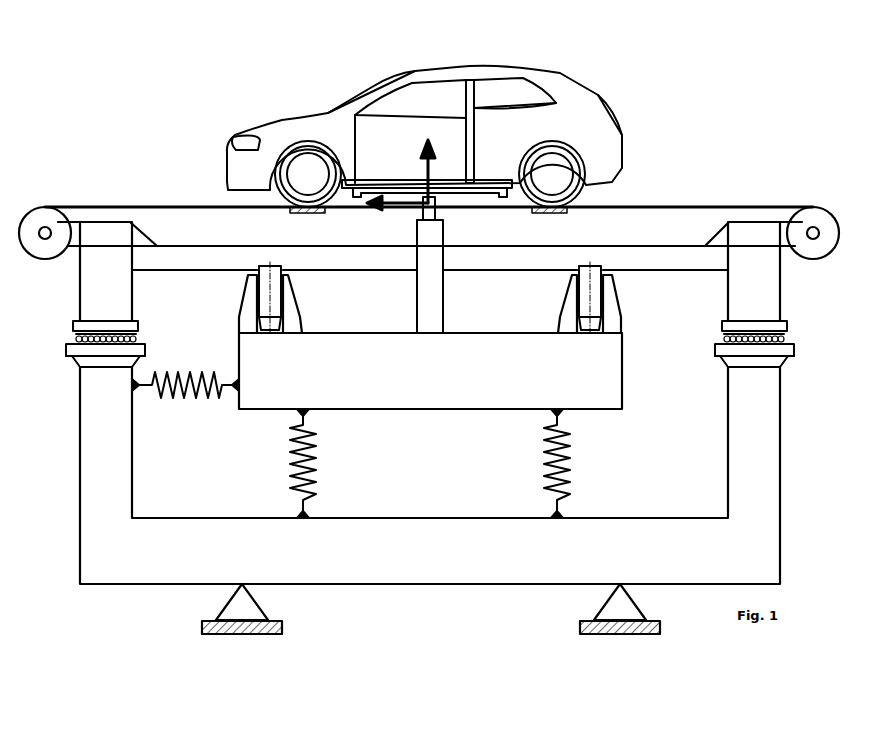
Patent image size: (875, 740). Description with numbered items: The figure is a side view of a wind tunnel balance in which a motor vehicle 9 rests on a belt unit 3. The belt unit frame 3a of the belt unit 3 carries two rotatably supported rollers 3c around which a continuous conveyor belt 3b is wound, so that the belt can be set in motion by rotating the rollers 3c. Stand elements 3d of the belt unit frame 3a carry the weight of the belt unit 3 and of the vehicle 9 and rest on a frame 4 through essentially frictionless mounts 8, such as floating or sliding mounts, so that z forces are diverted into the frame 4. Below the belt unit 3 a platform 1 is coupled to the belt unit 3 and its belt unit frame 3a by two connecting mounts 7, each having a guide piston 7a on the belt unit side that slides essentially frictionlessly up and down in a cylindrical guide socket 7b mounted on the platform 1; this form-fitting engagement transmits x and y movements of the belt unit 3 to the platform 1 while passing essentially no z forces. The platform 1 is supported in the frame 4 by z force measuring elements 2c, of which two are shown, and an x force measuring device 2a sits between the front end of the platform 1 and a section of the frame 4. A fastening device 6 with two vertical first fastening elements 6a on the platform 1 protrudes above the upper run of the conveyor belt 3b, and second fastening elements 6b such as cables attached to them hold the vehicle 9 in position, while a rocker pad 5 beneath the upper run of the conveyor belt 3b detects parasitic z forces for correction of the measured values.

The platform 1 is at (410, 390).
The x force measuring device 2a is at (175, 398).
The z force measuring elements 2c is at (295, 468).
The belt unit 3 is at (118, 202).
The belt unit frame 3a is at (163, 259).
The conveyor belt 3b is at (173, 205).
The rollers 3c is at (45, 218).
The stand elements 3d is at (95, 287).
The frame 4 is at (97, 394).
The rocker pad 5 is at (268, 287).
The fastening device 6 is at (446, 296).
The first fastening elements 6a is at (430, 277).
The second fastening elements 6b is at (375, 190).
The connecting mount 7 is at (238, 302).
The guide pistons 7a is at (255, 293).
The guide sockets 7b is at (246, 300).
The frictionless mounts 8 is at (90, 333).
The motor vehicle 9 is at (280, 128).